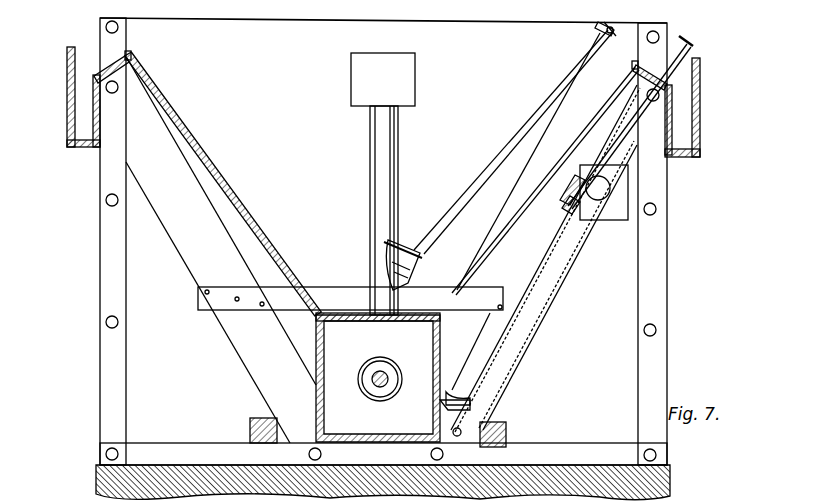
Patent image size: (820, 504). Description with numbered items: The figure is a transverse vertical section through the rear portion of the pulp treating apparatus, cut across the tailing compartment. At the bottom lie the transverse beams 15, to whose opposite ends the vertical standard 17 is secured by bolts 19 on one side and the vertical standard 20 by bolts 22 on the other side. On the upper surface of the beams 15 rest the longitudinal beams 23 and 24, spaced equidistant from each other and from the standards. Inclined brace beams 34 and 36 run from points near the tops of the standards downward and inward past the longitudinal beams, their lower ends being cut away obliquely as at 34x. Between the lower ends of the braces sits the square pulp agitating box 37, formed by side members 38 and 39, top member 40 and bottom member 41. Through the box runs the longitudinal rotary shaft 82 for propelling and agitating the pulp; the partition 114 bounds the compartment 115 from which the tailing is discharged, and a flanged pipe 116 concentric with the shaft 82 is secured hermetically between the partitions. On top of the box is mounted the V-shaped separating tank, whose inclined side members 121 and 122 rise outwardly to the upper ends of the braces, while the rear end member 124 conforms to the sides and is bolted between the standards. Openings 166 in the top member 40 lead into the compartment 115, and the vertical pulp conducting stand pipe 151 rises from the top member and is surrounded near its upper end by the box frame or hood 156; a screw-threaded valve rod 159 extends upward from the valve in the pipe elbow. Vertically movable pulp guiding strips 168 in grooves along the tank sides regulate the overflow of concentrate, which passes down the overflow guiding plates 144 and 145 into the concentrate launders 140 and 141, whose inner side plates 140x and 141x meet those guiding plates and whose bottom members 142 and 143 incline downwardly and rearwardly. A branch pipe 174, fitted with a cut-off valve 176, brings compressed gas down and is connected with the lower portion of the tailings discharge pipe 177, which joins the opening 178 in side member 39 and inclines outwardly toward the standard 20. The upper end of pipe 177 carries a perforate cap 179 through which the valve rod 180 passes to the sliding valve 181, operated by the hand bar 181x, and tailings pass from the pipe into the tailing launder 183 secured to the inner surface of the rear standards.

The beams 15 is at (546, 447).
The vertical standard 17 is at (100, 283).
The bolts 19 is at (359, 466).
The vertical standard 20 is at (666, 259).
The bolts 22 is at (668, 463).
The longitudinal beam 23 is at (252, 425).
The longitudinal beam 24 is at (506, 426).
The brace beam 34 is at (210, 268).
The oblique cut-away surface 34x is at (312, 395).
The brace beam 36 is at (560, 284).
The pulp agitating case or box 37 is at (343, 389).
The side member 38 is at (318, 346).
The side member 39 is at (443, 354).
The top member 40 is at (362, 312).
The bottom member 41 is at (416, 441).
The longitudinal rotary shaft 82 is at (378, 380).
The partition 114 is at (355, 418).
The compartment 115 is at (417, 343).
The pipe 116 is at (369, 359).
The side member 121 is at (233, 184).
The side member 122 is at (604, 106).
The rear end member 124 is at (383, 41).
The concentrate discharging launder 140 is at (68, 117).
The inner side plate of launder 140x is at (93, 97).
The concentrate discharging launder 141 is at (700, 120).
The inner side plate of launder 141x is at (672, 112).
The bottom member 142 is at (86, 147).
The bottom member 143 is at (686, 160).
The overflow guiding plate 144 is at (112, 64).
The overflow guiding plate 145 is at (676, 48).
The pulp conducting stand pipe 151 is at (372, 165).
The box frame or hood 156 is at (408, 89).
The valve rod 159 is at (481, 170).
The openings 166 is at (336, 312).
The pulp guiding strip 168 is at (132, 57).
The branch pipe 174 is at (493, 201).
The cut-off valve 176 is at (598, 27).
The discharge pipe 177 is at (518, 348).
The opening 178 is at (438, 403).
The perforate cap 179 is at (627, 171).
The valve rod 180 is at (644, 118).
The sliding valve 181 is at (572, 212).
The hand bar 181x is at (696, 47).
The tailing launder or box 183 is at (618, 218).